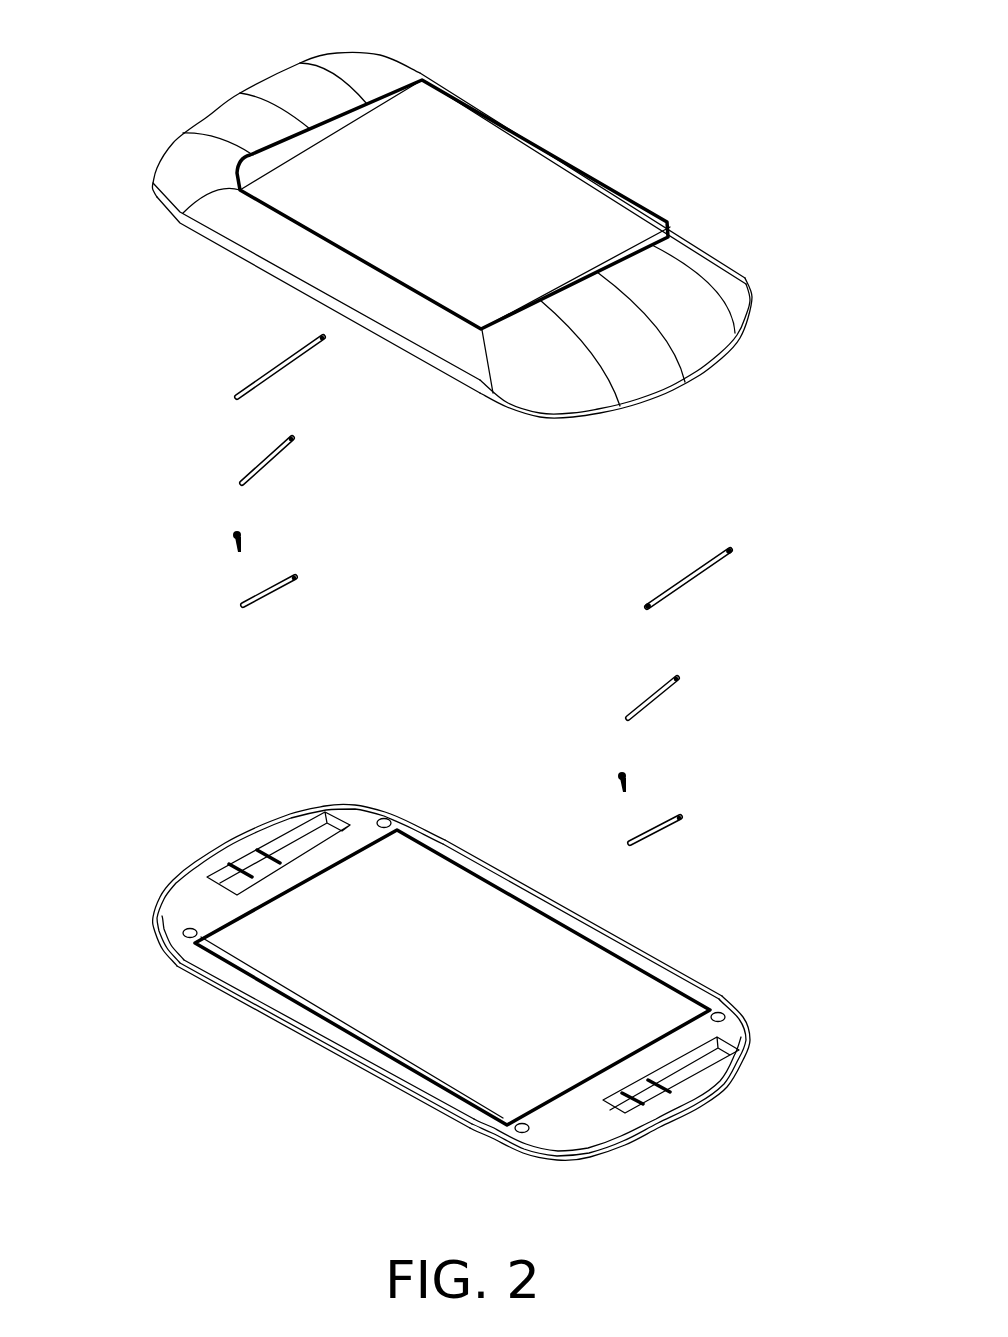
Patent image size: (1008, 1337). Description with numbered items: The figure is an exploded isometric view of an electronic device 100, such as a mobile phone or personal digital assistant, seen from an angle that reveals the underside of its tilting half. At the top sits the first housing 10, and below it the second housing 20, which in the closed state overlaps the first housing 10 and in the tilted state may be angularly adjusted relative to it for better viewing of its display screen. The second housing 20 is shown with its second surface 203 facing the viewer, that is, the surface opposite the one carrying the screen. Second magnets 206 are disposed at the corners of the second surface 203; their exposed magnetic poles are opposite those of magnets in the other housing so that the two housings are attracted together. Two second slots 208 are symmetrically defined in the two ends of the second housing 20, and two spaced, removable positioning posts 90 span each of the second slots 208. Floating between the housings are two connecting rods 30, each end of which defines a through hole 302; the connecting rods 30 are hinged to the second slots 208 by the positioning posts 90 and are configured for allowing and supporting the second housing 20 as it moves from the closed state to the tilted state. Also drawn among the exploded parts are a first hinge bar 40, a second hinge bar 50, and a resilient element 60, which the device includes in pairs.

The electronic device 100 is at (487, 38).
The first housing 10 is at (562, 207).
The second housing 20 is at (318, 788).
The connecting rod 30 is at (277, 363).
The through hole 302 is at (733, 553).
The first hinge bar 40 is at (657, 693).
The second hinge bar 50 is at (657, 833).
The resilient element 60 is at (620, 772).
The positioning post 90 is at (262, 860).
The second surface 203 is at (312, 978).
The second magnet 206 is at (387, 818).
The second slot 208 is at (282, 838).